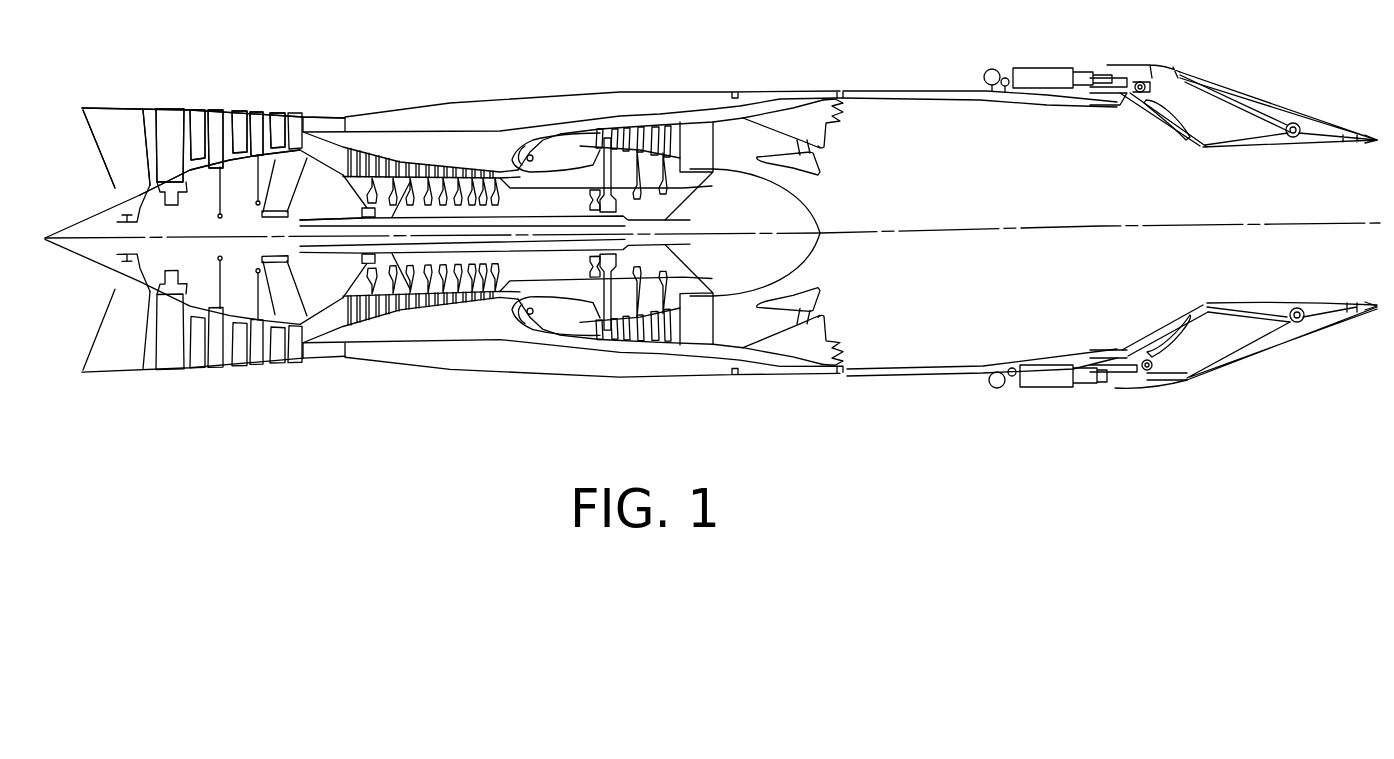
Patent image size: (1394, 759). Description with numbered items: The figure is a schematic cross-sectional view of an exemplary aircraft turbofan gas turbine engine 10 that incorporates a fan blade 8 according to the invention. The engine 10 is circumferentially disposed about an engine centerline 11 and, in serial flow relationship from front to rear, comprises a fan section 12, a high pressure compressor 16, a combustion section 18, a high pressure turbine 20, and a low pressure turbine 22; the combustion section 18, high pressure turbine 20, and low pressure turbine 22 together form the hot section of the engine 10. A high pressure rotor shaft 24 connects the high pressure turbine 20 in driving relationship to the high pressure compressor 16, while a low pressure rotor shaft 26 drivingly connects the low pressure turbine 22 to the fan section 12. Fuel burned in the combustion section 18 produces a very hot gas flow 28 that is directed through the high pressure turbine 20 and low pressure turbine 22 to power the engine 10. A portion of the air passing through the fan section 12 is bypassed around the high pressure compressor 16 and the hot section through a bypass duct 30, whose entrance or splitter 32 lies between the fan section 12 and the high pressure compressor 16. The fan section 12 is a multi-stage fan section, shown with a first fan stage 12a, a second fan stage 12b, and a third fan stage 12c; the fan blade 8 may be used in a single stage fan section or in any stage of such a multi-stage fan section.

The fan blade 8 is at (135, 106).
The aircraft turbofan gas turbine engine 10 is at (418, 400).
The engine centerline 11 is at (90, 230).
The fan section 12 is at (195, 98).
The first fan stage 12a is at (187, 195).
The second fan stage 12b is at (223, 173).
The third fan stage 12c is at (277, 110).
The high pressure compressor 16 is at (420, 160).
The combustion section 18 is at (531, 148).
The high pressure turbine 20 is at (607, 127).
The low pressure turbine 22 is at (648, 128).
The high pressure rotor shaft 24 is at (527, 214).
The low pressure rotor shaft 26 is at (583, 249).
The hot gas flow 28 is at (548, 144).
The bypass duct 30 is at (452, 113).
The splitter 32 is at (310, 117).